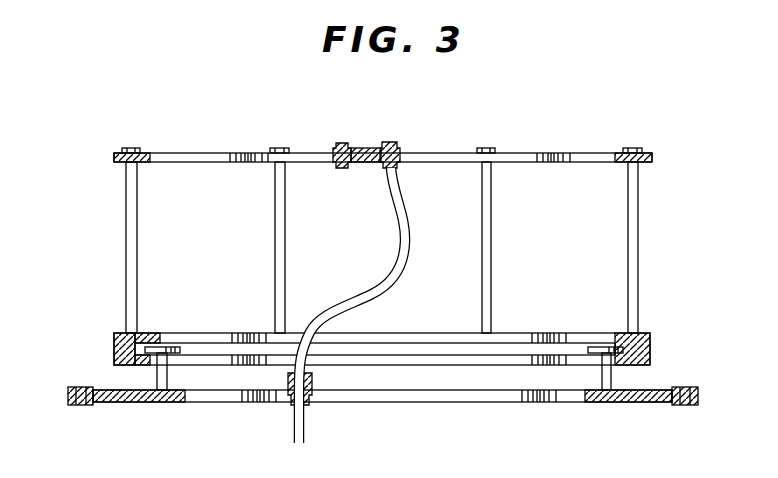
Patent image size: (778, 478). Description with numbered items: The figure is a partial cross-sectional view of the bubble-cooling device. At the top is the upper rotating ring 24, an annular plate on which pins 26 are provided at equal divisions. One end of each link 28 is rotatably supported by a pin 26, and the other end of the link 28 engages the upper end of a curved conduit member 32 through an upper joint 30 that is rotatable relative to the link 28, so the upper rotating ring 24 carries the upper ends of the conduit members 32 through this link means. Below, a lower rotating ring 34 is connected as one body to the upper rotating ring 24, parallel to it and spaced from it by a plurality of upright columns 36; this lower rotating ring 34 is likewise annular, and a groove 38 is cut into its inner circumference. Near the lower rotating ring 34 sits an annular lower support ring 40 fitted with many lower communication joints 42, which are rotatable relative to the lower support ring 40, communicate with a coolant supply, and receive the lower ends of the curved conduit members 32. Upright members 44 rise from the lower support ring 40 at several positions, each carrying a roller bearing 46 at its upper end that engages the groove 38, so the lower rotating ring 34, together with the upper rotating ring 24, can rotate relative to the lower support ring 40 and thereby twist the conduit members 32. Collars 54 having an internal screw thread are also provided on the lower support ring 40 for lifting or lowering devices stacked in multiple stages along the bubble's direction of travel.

The upper rotating ring 24 is at (579, 156).
The pin 26 is at (339, 145).
The link 28 is at (364, 149).
The upper joint 30 is at (393, 143).
The curved conduit member 32 is at (410, 248).
The lower rotating ring 34 is at (652, 348).
The upright column 36 is at (637, 255).
The groove 38 is at (649, 333).
The lower support ring 40 is at (132, 402).
The lower communication joint 42 is at (313, 383).
The upright member 44 is at (167, 376).
The roller bearing 46 is at (161, 346).
The collar 54 is at (80, 405).